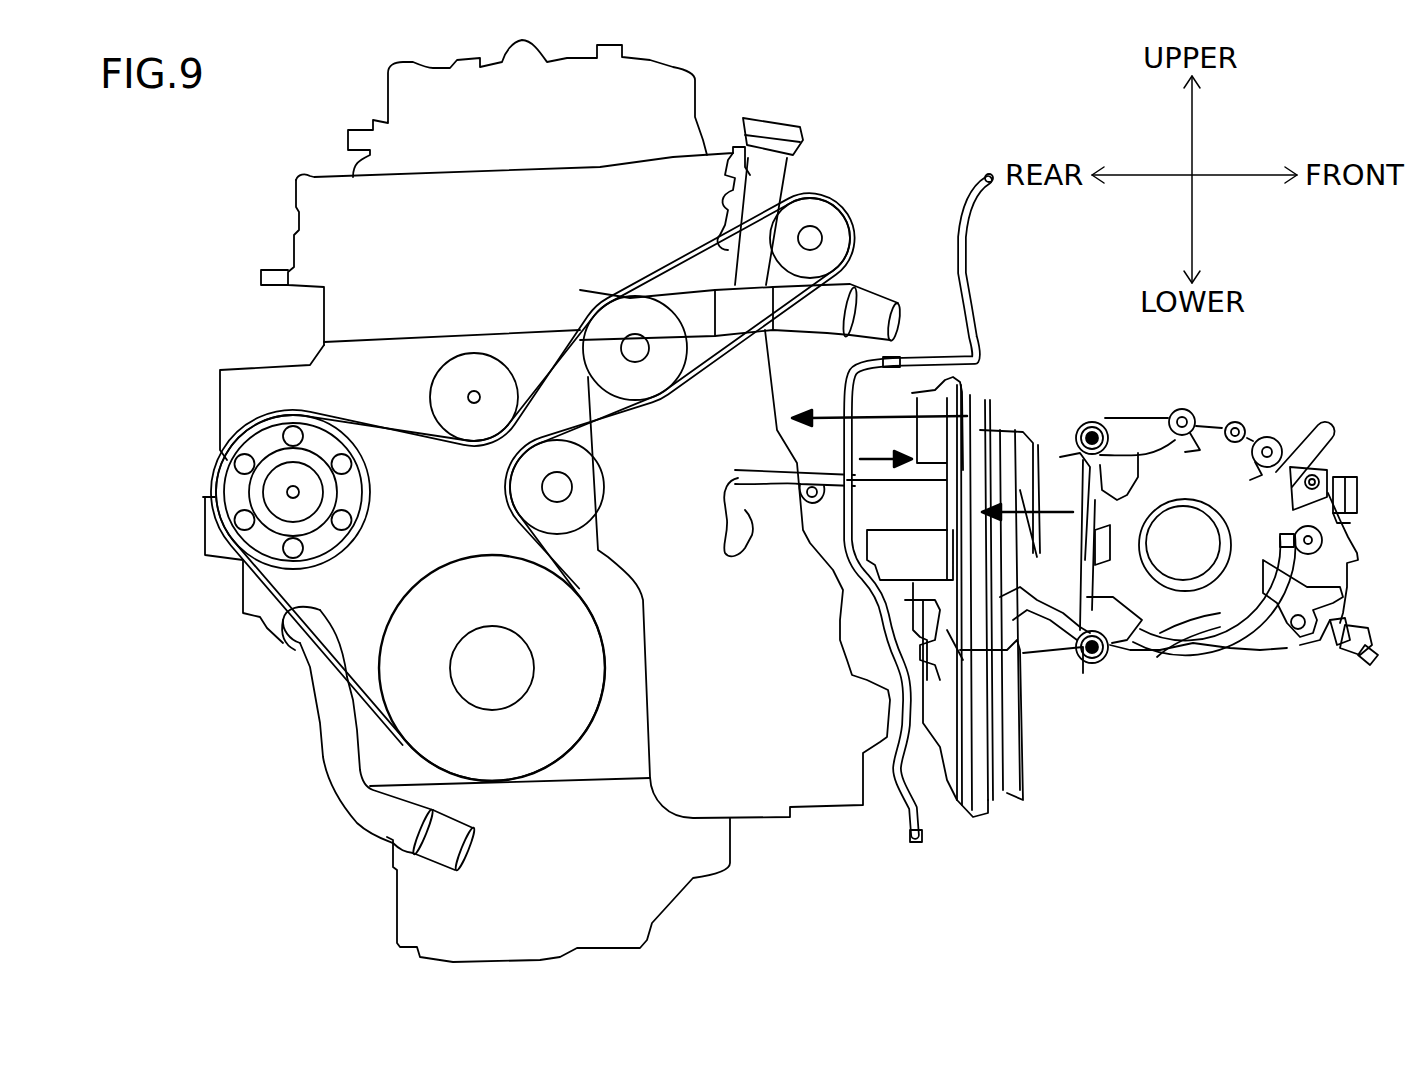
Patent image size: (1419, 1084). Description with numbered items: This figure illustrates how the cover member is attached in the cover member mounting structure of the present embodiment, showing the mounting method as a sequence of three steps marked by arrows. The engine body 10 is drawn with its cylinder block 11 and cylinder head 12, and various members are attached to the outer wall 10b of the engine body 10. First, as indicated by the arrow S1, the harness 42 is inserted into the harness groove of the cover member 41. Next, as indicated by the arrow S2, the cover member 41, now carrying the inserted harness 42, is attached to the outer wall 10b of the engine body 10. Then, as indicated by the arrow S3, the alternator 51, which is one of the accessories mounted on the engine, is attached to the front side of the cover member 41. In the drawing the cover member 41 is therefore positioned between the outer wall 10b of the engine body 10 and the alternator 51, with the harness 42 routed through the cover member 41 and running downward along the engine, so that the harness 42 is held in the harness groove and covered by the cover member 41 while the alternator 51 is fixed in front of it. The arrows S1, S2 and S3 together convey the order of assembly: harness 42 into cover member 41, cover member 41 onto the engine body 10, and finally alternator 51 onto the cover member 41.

The engine body 10 is at (296, 172).
The cylinder block 11 is at (267, 385).
The cylinder head 12 is at (332, 218).
The outer wall 10b is at (637, 580).
The cover member 41 is at (948, 632).
The harness 42 is at (905, 787).
The alternator 51 is at (1195, 612).
The arrow S1 is at (887, 507).
The arrow S2 is at (817, 410).
The arrow S3 is at (1048, 443).